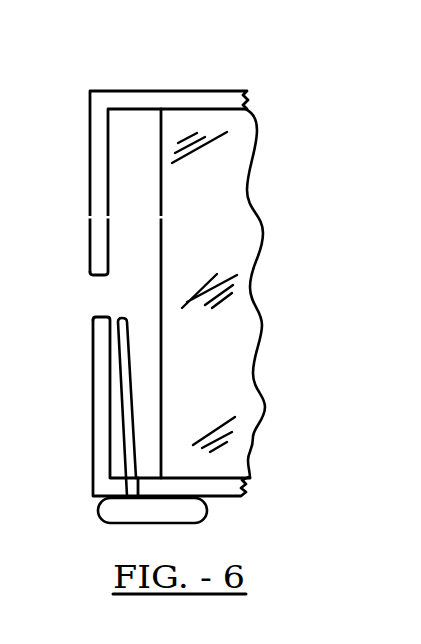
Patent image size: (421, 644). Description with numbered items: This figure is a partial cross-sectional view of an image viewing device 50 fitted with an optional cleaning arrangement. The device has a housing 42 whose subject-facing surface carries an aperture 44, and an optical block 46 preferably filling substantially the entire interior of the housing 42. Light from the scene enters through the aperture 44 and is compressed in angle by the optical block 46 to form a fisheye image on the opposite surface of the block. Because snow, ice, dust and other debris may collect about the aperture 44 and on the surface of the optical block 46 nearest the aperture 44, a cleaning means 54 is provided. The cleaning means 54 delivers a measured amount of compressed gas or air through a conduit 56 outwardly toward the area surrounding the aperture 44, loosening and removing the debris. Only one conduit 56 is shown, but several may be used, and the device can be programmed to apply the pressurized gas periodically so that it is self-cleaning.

The image viewing device 50 is at (232, 64).
The housing 42 is at (140, 91).
The aperture 44 is at (100, 297).
The optical block 46 is at (227, 388).
The cleaning means 54 is at (166, 522).
The conduit 56 is at (128, 380).